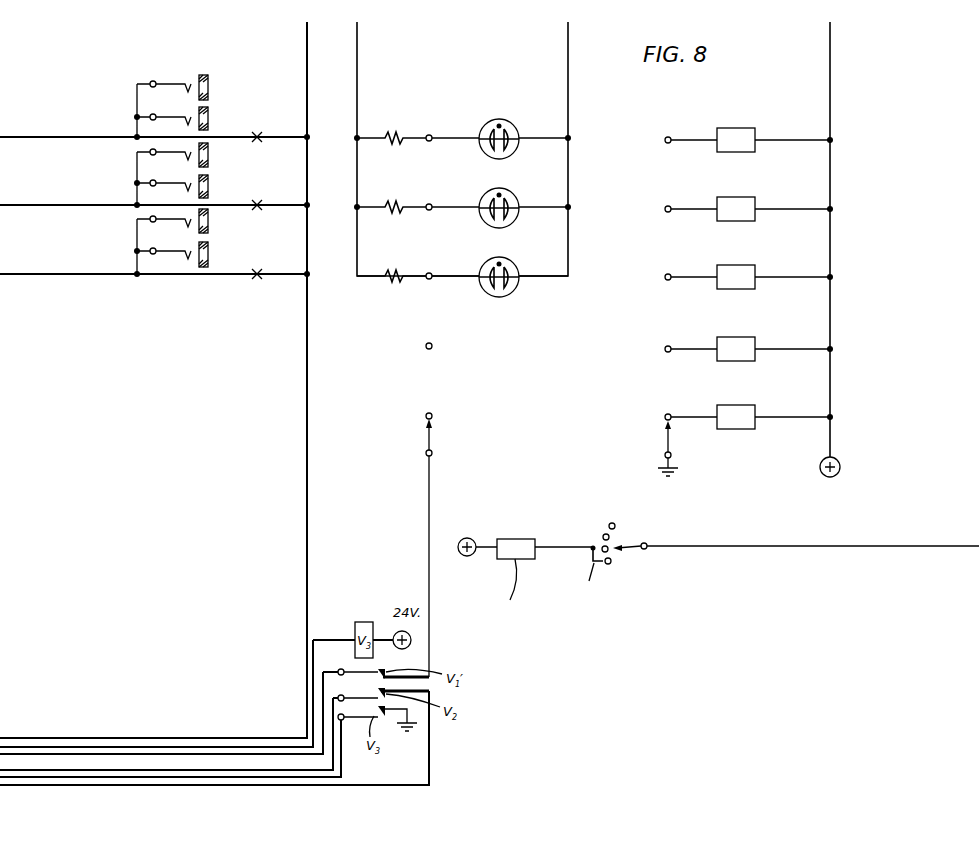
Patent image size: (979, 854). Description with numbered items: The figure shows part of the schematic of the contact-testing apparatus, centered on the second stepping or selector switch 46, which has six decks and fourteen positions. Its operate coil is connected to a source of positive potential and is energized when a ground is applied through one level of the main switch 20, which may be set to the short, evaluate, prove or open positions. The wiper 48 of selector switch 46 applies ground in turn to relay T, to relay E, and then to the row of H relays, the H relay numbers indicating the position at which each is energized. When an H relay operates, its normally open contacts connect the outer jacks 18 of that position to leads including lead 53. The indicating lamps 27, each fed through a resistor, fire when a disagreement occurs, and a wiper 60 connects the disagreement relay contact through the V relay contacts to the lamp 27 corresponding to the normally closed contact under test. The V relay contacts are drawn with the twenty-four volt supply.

The outer jacks 18 is at (209, 108).
The main switch 20 is at (633, 552).
The indicating lamps 27 is at (488, 192).
The selector switch 46 is at (541, 578).
The wiper 48 is at (668, 438).
The lead 53 is at (305, 339).
The wiper 60 is at (429, 437).